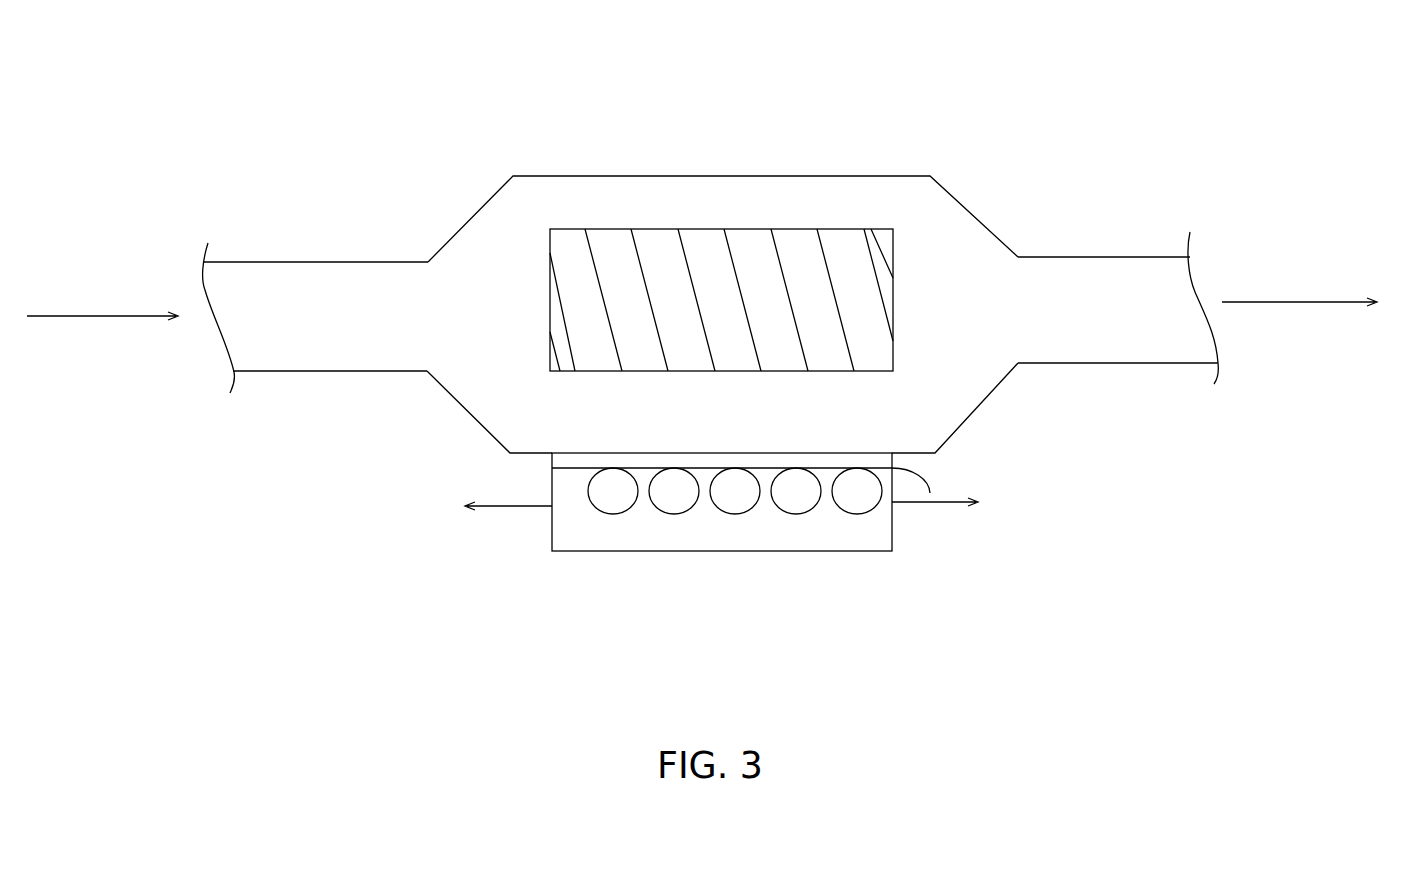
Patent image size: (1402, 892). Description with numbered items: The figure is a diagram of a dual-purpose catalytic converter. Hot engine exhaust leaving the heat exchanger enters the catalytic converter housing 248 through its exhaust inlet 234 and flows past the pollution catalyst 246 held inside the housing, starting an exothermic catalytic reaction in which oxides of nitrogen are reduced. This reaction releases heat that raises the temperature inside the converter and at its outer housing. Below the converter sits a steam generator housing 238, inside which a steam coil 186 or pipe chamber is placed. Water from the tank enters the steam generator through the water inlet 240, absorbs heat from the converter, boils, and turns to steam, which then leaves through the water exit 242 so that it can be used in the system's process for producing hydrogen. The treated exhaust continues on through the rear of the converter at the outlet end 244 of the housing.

The steam coil 186 is at (643, 466).
The exhaust inlet 234 is at (203, 275).
The steam generator housing 238 is at (733, 551).
The water inlet to steam generator 240 is at (502, 507).
The water exit from steam generator 242 is at (940, 503).
The outlet conduit 244 is at (1192, 270).
The pollution catalyst inside catalytic converter 246 is at (893, 312).
The catalytic converter housing 248 is at (618, 176).